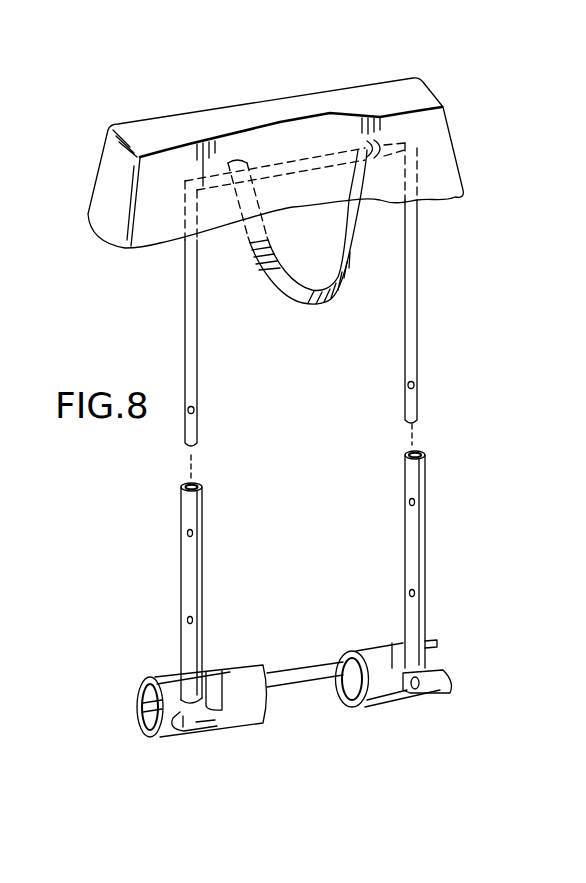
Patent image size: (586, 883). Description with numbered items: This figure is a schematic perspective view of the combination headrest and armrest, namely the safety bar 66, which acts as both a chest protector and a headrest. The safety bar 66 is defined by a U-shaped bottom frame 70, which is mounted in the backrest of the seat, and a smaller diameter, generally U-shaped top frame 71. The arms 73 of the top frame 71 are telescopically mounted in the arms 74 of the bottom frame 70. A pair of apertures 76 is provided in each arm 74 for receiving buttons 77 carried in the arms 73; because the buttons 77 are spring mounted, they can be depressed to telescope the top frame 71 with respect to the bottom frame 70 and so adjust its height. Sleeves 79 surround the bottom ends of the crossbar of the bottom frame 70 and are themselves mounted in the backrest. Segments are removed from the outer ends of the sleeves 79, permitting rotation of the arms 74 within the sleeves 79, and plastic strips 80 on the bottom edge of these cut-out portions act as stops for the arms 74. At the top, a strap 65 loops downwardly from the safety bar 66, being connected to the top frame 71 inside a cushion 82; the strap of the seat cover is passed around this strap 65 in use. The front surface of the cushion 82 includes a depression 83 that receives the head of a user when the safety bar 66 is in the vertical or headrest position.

The strap 65 is at (305, 303).
The safety bar 66 is at (413, 78).
The U-shaped bottom frame 70 is at (287, 671).
The top frame 71 is at (325, 150).
The arms of the top frame 73 is at (193, 335).
The arms of the bottom frame 74 is at (187, 583).
The apertures 76 is at (187, 620).
The buttons 77 is at (195, 410).
The sleeves 79 is at (253, 722).
The plastic strips 80 is at (198, 718).
The cushion 82 is at (163, 130).
The depression 83 is at (283, 137).